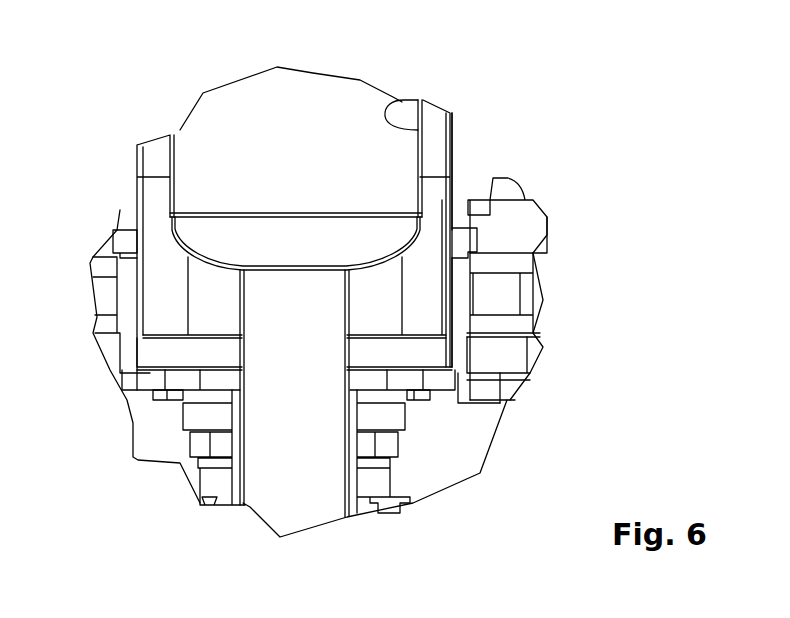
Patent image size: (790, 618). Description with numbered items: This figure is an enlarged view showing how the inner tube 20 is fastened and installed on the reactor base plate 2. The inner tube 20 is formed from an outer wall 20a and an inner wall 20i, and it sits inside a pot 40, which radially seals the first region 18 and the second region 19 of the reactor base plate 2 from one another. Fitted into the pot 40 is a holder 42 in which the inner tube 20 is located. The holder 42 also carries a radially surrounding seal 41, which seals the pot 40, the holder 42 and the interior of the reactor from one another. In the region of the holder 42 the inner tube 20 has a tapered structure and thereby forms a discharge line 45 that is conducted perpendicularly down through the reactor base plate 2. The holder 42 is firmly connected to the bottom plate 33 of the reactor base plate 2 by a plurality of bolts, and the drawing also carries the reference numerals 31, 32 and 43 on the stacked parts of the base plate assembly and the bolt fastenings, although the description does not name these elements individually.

The reactor base plate 2 is at (477, 390).
The first region 18 is at (506, 298).
The second region 19 is at (516, 352).
The inner tube 20 is at (353, 195).
The outer wall 20a is at (453, 152).
The inner wall 20i is at (392, 102).
The upper housing part 31 is at (523, 262).
The intermediate ring 32 is at (515, 324).
The bottom plate 33 is at (507, 382).
The pot 40 is at (127, 293).
The seal 41 is at (133, 232).
The holder 42 is at (163, 350).
The fastening screw 43 is at (170, 394).
The discharge line 45 is at (287, 418).